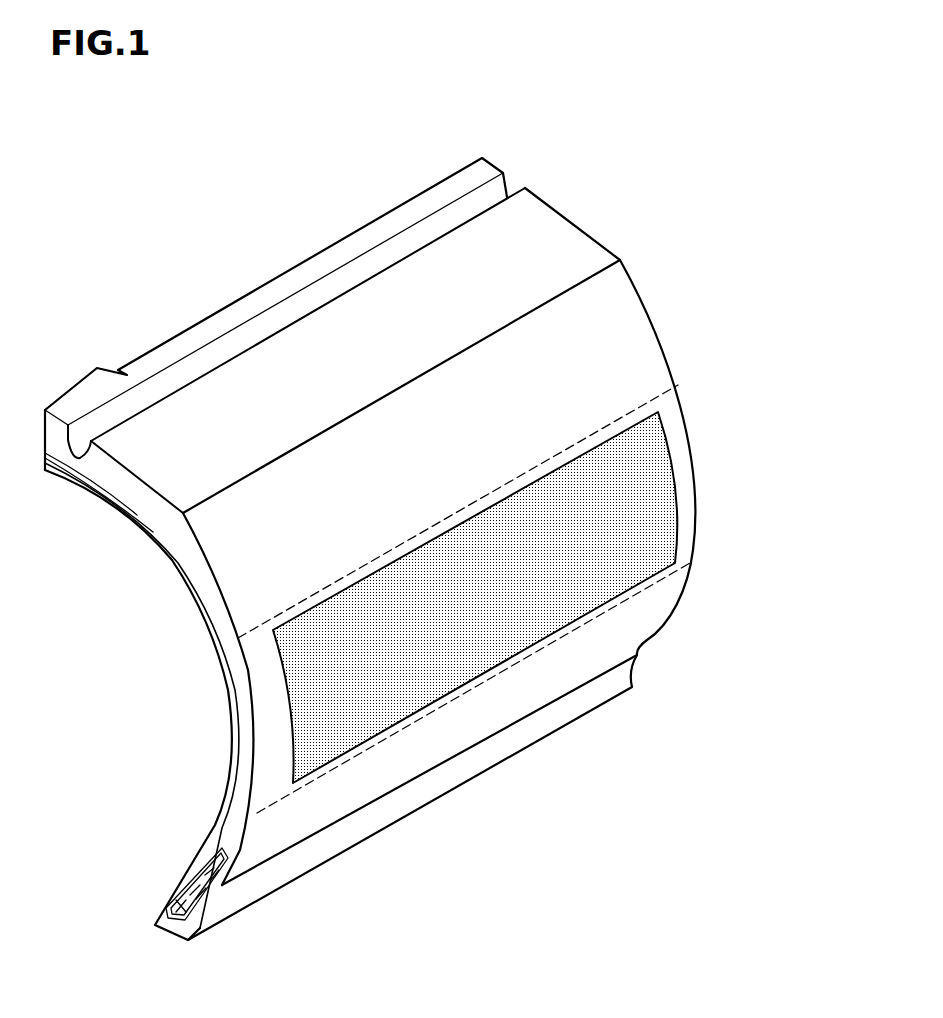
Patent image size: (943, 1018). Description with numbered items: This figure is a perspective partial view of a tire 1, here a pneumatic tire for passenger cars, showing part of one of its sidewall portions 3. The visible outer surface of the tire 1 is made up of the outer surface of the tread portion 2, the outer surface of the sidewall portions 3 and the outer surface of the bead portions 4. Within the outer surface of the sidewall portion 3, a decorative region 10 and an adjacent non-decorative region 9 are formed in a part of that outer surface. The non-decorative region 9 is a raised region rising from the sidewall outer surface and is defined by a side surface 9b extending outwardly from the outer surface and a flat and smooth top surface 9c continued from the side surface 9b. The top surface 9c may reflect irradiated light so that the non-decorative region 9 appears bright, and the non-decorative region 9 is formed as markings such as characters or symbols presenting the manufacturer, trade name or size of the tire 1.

The tire 1 is at (413, 168).
The tread portion 2 is at (574, 196).
The sidewall portion 3 is at (684, 489).
The bead portion 4 is at (255, 934).
The non-decorative region 9 is at (612, 483).
The side surface 9b is at (320, 742).
The top surface 9c is at (337, 727).
The decorative region 10 is at (642, 443).